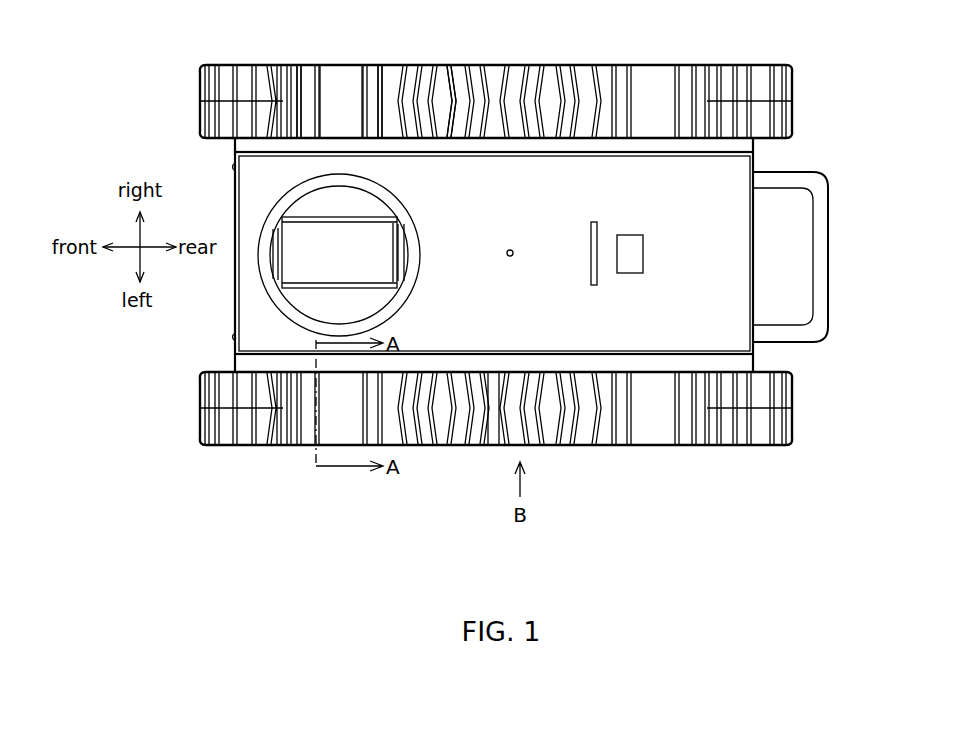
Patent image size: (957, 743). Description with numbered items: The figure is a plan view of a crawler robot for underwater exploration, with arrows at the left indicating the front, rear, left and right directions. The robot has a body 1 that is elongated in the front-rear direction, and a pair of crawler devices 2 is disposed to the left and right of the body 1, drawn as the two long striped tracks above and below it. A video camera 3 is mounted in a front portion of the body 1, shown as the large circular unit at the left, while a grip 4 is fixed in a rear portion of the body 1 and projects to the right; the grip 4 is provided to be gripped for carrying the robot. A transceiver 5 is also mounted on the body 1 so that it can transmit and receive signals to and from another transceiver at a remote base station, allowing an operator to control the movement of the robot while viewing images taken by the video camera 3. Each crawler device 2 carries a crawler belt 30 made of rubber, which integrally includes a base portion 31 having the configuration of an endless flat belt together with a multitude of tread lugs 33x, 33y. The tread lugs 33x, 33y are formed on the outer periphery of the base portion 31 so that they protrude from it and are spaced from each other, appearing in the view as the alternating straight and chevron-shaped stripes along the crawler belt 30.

The body 1 is at (720, 174).
The crawler devices 2 is at (657, 61).
The video camera 3 is at (369, 235).
The grip 4 is at (811, 246).
The transceiver 5 is at (630, 235).
The crawler belt 30 is at (336, 78).
The base portion 31 is at (381, 80).
The tread lug 33x is at (299, 82).
The tread lug 33y is at (446, 92).